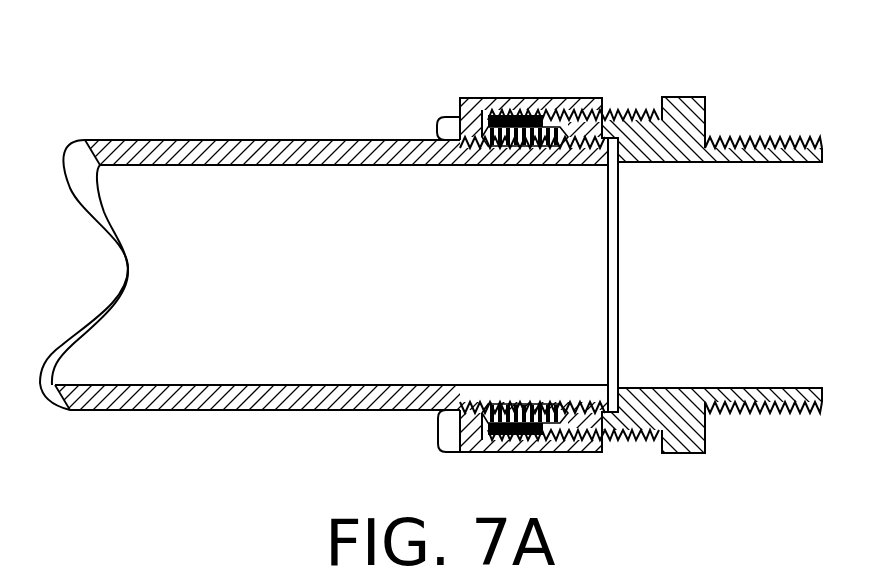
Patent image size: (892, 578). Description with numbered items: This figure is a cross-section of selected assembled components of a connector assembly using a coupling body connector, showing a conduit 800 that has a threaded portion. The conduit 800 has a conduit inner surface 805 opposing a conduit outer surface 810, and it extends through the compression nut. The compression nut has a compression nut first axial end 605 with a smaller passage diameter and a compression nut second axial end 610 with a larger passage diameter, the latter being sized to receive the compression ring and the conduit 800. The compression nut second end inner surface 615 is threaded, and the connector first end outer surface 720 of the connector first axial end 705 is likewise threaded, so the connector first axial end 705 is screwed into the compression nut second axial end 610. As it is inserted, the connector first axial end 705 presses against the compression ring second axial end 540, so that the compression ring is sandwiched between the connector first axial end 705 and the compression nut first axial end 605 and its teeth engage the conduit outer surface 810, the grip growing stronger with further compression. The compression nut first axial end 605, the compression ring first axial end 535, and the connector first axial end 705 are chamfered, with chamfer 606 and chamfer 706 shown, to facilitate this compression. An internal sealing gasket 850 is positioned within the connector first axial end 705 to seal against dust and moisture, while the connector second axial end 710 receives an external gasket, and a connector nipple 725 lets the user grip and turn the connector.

The conduit 800 is at (228, 435).
The conduit inner surface 805 is at (172, 383).
The conduit outer surface 810 is at (175, 413).
The internal sealing gasket 850 is at (606, 313).
The compression ring first axial end 535 is at (457, 116).
The compression ring second axial end 540 is at (565, 110).
The compression nut second end inner surface 615 is at (518, 115).
The compression nut first axial end 605 is at (461, 452).
The chamfer 606 is at (463, 410).
The compression nut second axial end 610 is at (548, 453).
The connector first axial end 705 is at (618, 412).
The chamfer 706 is at (548, 418).
The connector second axial end 710 is at (755, 135).
The connector first end outer surface 720 is at (626, 110).
The connector nipple 725 is at (681, 97).